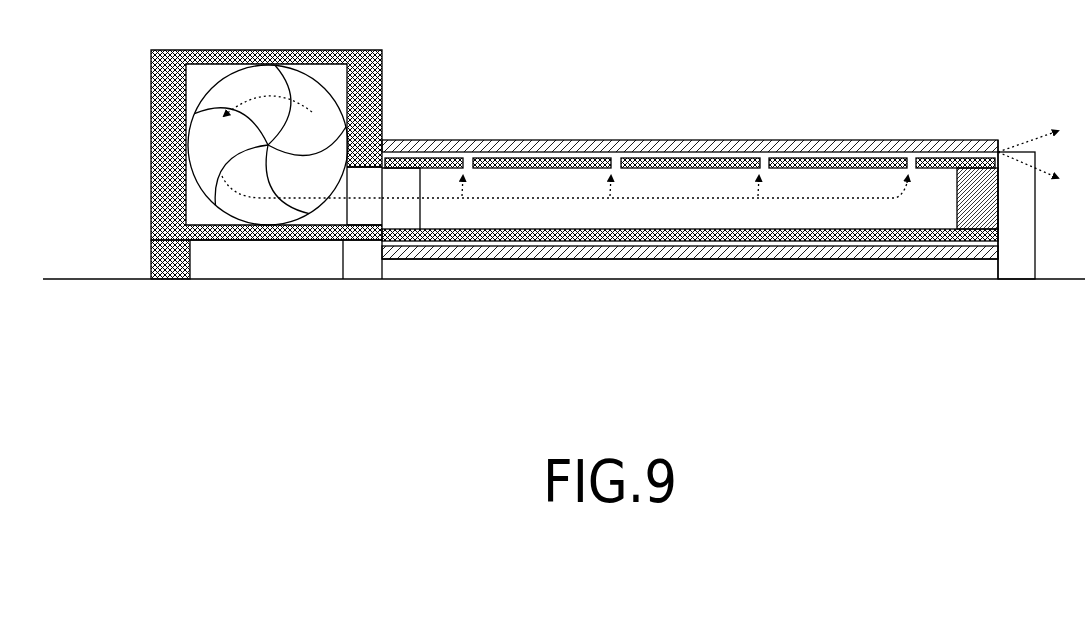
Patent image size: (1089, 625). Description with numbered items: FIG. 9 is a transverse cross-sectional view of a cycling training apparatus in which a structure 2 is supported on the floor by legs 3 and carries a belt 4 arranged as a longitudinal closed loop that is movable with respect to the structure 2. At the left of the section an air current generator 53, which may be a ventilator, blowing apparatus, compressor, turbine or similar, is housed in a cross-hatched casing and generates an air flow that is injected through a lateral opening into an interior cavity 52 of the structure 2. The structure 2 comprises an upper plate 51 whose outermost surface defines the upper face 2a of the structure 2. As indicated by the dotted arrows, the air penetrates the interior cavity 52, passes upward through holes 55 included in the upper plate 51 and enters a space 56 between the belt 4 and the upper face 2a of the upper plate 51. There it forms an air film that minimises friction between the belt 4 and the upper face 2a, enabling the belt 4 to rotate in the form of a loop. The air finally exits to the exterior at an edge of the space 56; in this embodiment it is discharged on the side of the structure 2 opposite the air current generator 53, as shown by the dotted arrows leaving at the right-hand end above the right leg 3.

The structure 2 is at (997, 200).
The upper face 2a is at (690, 158).
The legs 3 is at (156, 254).
The belt 4 is at (470, 140).
The upper plate 51 is at (530, 158).
The interior cavity 52 is at (829, 215).
The air current generator 53 is at (151, 82).
The holes 55 is at (615, 160).
The space 56 is at (838, 158).